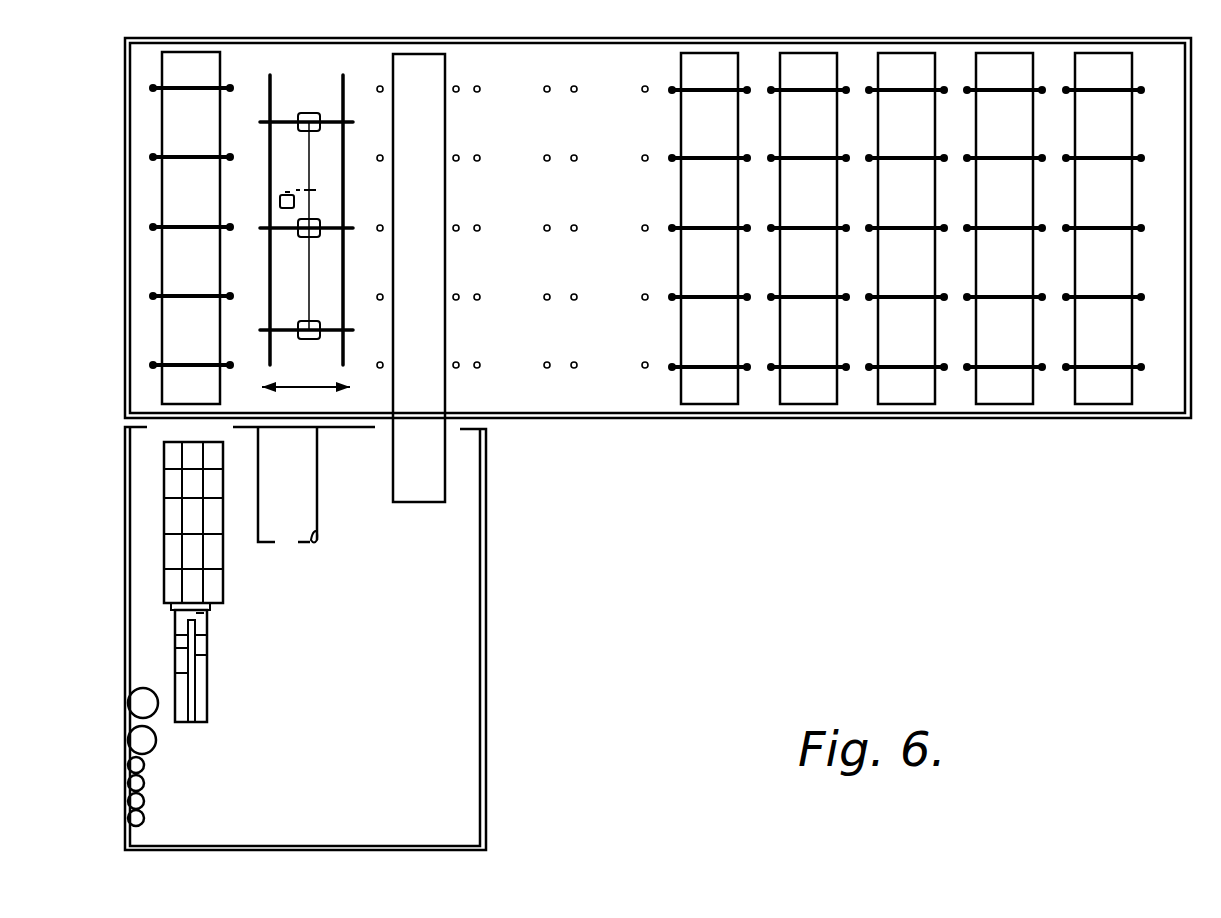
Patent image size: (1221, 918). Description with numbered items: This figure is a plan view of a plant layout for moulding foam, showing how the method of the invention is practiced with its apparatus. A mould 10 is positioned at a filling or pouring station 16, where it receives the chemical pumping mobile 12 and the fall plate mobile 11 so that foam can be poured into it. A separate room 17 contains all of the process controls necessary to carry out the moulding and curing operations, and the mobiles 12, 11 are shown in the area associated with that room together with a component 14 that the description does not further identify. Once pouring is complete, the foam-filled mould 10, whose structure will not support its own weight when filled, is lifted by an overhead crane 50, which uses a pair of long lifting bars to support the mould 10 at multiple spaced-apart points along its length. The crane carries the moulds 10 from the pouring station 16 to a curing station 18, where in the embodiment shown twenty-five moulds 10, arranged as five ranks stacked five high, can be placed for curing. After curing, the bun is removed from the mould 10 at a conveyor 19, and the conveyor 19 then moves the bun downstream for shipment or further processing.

The mould 10 is at (170, 189).
The fall plate mobile 11 is at (170, 552).
The chemical pumping mobile 12 is at (178, 660).
The base plate 14 is at (175, 612).
The filling or pouring station 16 is at (160, 333).
The separate room 17 is at (313, 542).
The curing station 18 is at (1174, 431).
The conveyor 19 is at (447, 68).
The overhead crane 50 is at (272, 100).